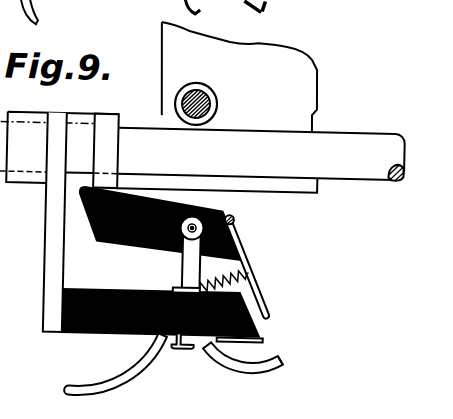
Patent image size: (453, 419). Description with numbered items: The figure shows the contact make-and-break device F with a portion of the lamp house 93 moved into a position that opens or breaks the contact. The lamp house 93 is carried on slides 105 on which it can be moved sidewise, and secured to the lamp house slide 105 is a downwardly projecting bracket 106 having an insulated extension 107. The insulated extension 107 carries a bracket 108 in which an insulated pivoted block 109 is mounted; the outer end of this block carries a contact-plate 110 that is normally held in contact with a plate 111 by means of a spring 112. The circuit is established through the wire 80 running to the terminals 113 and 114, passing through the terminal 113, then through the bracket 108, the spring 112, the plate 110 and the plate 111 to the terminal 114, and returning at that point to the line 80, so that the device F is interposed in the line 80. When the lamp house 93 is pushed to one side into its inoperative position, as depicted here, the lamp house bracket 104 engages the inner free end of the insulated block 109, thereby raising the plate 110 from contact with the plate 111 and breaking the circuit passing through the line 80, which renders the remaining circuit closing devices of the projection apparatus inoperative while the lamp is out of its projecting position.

The lamp house 93 is at (305, 80).
The lamp house bracket 104 is at (114, 102).
The lamp house slide 105 is at (350, 167).
The downwardly projecting bracket 106 is at (48, 250).
The insulated extension 107 is at (109, 335).
The bracket 108 is at (187, 272).
The insulated pivoted block 109 is at (132, 245).
The contact-plate 110 is at (261, 296).
The plate 111 is at (269, 338).
The spring 112 is at (247, 273).
The terminal 113 is at (178, 348).
The terminal 114 is at (288, 350).
The line 80 is at (118, 386).
The contact make-and-break device F is at (265, 230).